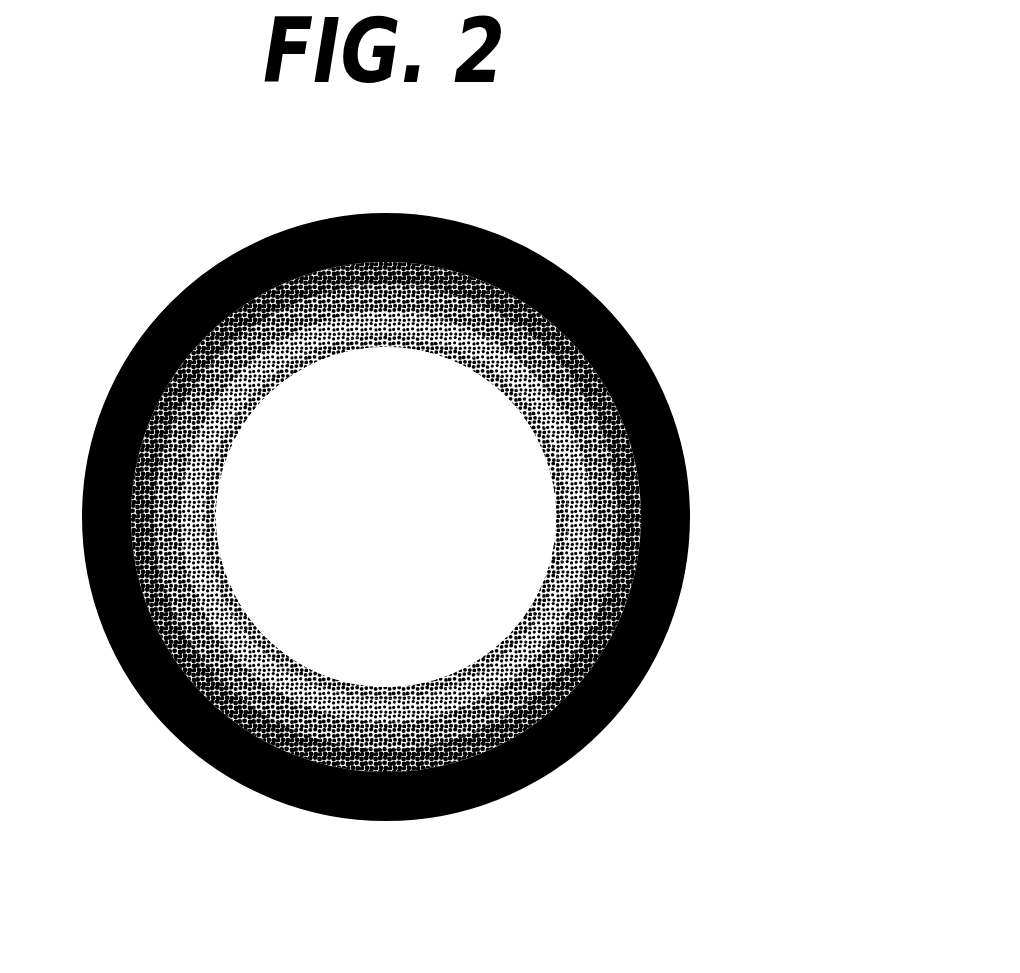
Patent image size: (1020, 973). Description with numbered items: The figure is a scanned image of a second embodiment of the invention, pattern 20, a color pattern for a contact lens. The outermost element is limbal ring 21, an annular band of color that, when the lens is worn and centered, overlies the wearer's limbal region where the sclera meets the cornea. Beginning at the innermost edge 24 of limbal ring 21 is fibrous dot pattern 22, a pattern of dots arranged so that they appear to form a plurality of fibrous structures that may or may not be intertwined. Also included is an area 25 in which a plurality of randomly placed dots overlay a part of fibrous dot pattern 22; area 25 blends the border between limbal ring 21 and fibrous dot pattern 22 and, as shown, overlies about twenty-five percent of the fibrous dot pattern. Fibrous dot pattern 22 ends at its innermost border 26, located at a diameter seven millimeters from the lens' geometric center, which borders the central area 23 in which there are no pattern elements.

The pattern 20 is at (783, 388).
The limbal ring 21 is at (670, 543).
The fibrous dot pattern 22 is at (217, 645).
The area 23 is at (418, 523).
The innermost edge 24 is at (582, 667).
The area 25 is at (483, 725).
The innermost border 26 is at (370, 693).